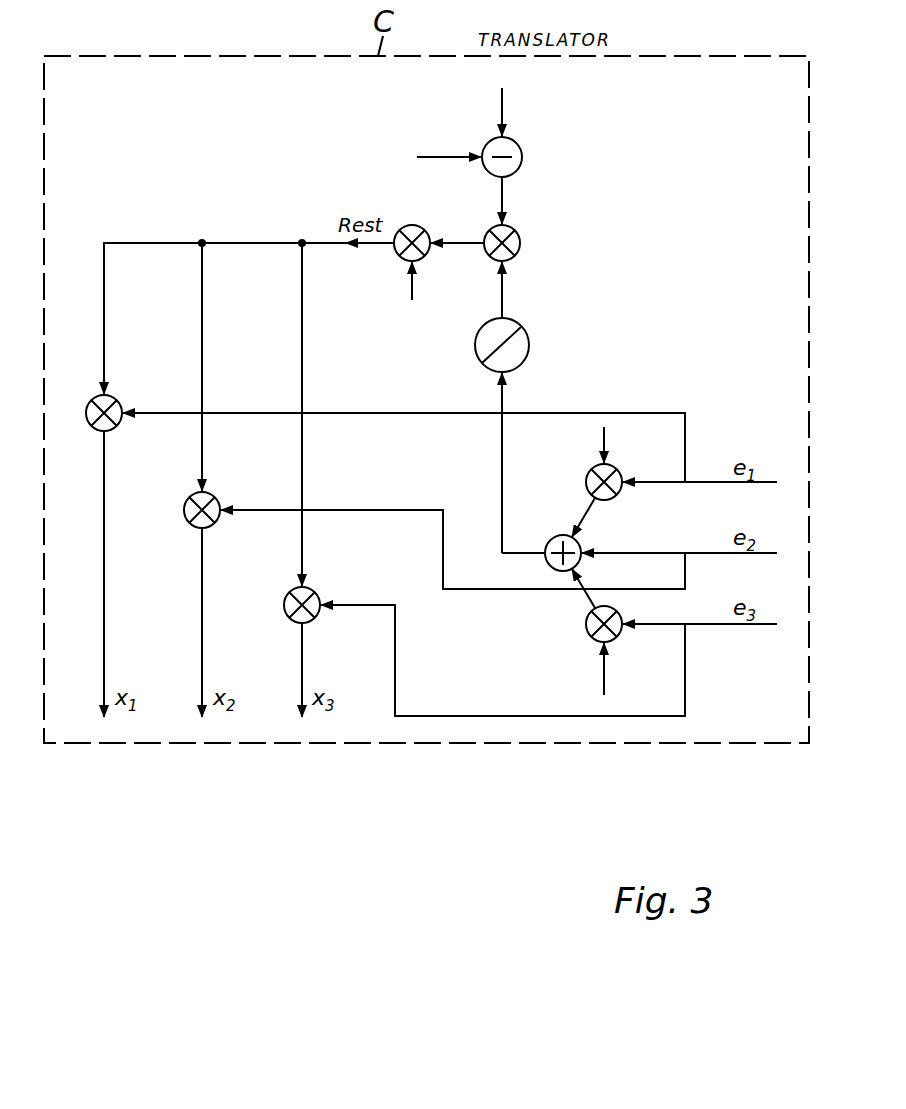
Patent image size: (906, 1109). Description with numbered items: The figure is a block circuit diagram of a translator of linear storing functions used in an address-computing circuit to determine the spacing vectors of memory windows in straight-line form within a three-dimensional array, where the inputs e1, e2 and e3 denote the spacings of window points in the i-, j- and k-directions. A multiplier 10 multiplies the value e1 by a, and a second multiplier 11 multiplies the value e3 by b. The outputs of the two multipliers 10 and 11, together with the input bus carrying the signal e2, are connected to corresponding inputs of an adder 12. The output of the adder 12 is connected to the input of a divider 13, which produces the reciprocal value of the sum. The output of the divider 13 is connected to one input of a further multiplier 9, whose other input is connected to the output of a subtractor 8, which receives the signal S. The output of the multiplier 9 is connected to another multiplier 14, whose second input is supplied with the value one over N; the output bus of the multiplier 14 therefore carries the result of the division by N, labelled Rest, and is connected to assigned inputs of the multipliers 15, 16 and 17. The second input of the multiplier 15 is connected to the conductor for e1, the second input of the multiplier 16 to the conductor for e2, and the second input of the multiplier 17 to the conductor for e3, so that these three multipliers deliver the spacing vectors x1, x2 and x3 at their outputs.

The subtractor 8 is at (512, 148).
The multiplier 9 is at (512, 238).
The multiplier 10 is at (608, 492).
The second multiplier 11 is at (608, 634).
The adder 12 is at (553, 540).
The divider 13 is at (521, 333).
The multiplier 14 is at (425, 232).
The multiplier 15 is at (116, 404).
The multiplier 16 is at (213, 501).
The multiplier 17 is at (313, 598).